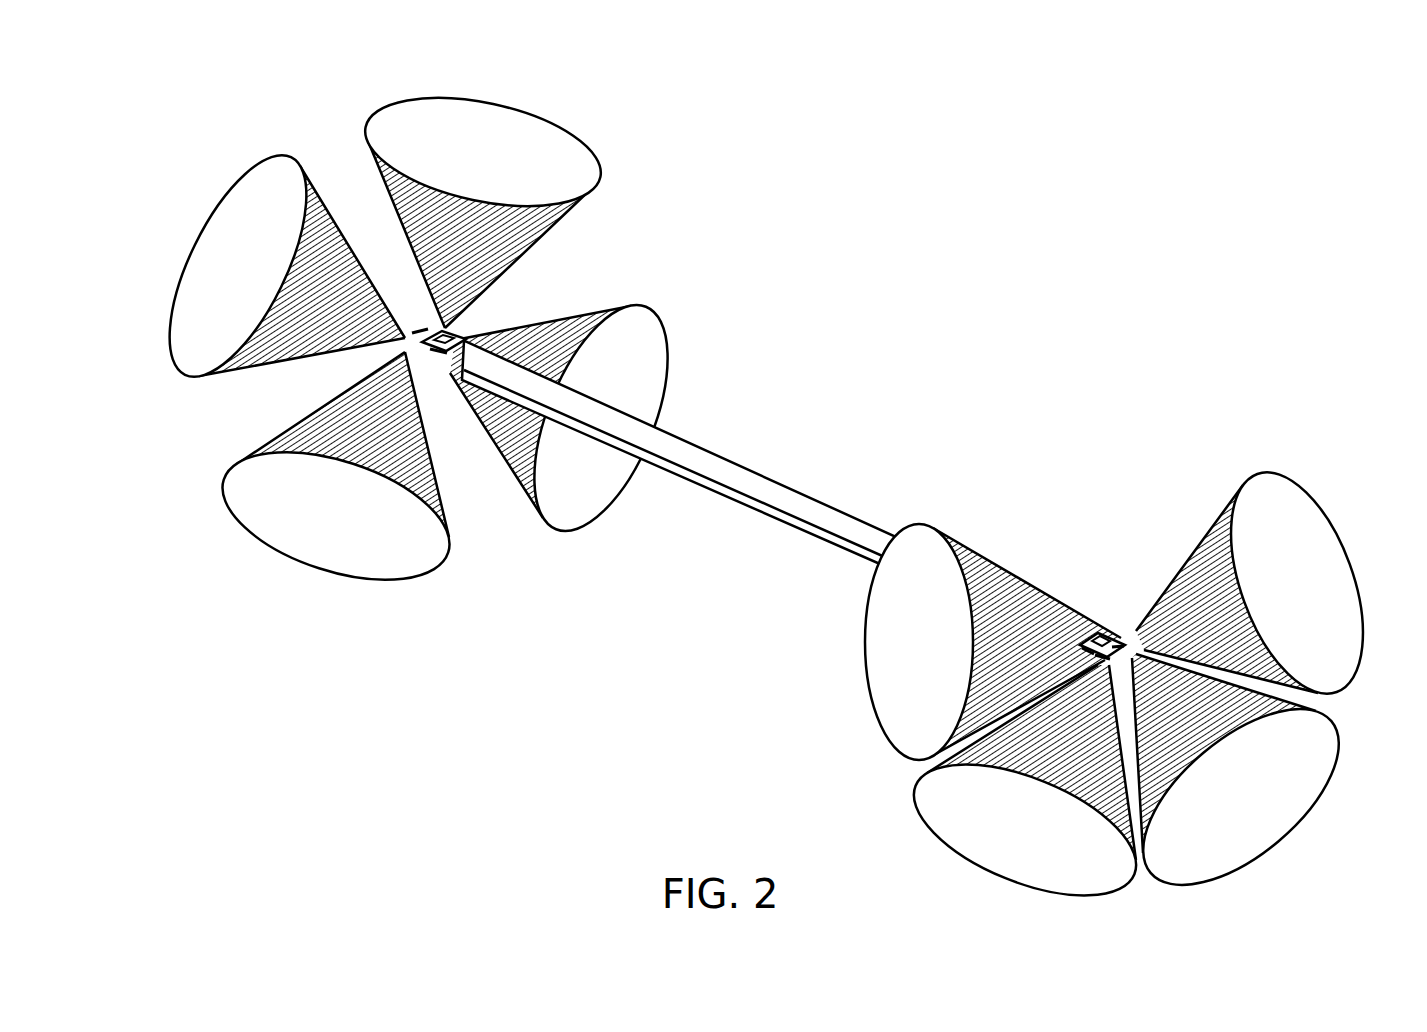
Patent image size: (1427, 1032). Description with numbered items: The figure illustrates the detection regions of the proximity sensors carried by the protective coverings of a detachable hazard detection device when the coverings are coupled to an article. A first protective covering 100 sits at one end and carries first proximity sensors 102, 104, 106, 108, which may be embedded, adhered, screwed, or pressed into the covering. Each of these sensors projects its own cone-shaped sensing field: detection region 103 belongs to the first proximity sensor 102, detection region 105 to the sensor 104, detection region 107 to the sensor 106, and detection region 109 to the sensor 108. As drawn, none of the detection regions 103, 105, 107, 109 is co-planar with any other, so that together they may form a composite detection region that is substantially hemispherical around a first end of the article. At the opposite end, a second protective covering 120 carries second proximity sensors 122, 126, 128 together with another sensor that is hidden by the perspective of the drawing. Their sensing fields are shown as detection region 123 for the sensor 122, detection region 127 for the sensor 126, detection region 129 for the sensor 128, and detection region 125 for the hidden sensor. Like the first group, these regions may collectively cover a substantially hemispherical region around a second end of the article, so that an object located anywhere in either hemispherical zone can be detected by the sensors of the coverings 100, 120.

The first protective covering 100 is at (1121, 618).
The first proximity sensor 102 is at (1105, 681).
The first proximity sensor 104 is at (1144, 655).
The first proximity sensor 106 is at (1131, 627).
The first proximity sensor 108 is at (1088, 663).
The detection region 103 is at (985, 862).
The detection region 105 is at (1250, 871).
The detection region 107 is at (1342, 563).
The detection region 109 is at (863, 657).
The second protective covering 120 is at (428, 372).
The second proximity sensor 122 is at (398, 357).
The second proximity sensor 126 is at (457, 327).
The second proximity sensor 128 is at (404, 327).
The detection region 123 is at (303, 539).
The detection region 125 is at (645, 357).
The detection region 127 is at (575, 148).
The detection region 129 is at (232, 213).